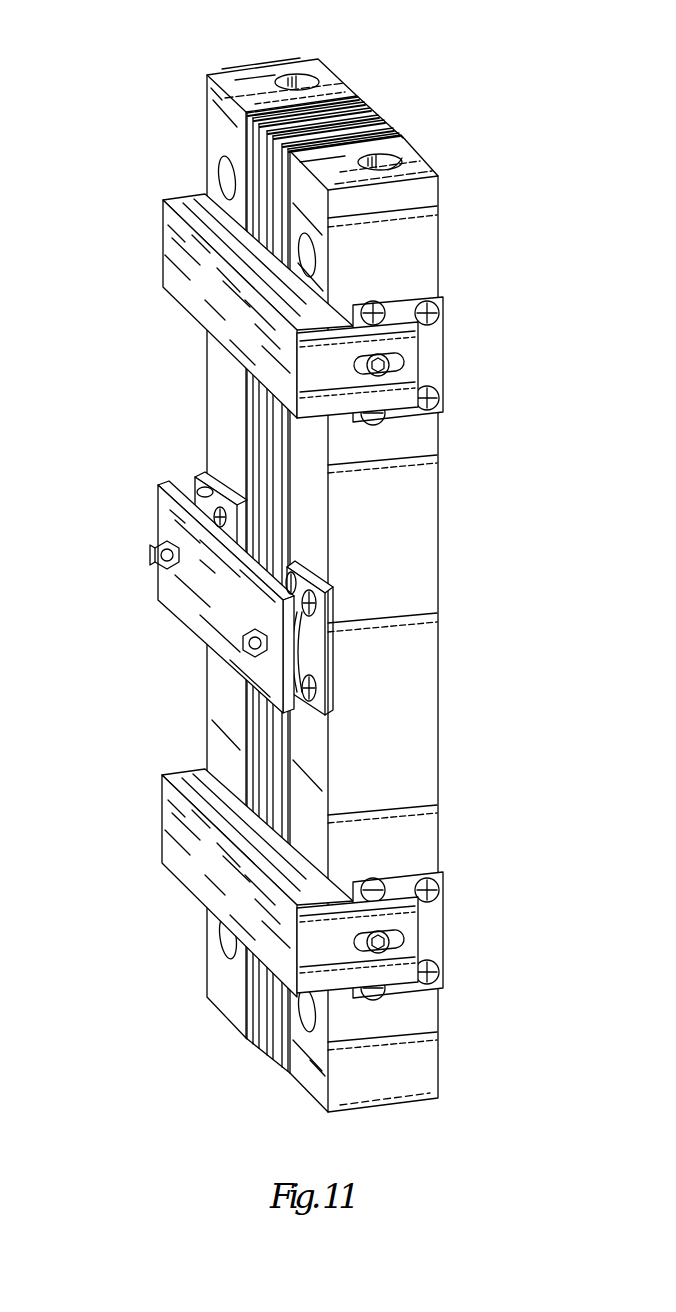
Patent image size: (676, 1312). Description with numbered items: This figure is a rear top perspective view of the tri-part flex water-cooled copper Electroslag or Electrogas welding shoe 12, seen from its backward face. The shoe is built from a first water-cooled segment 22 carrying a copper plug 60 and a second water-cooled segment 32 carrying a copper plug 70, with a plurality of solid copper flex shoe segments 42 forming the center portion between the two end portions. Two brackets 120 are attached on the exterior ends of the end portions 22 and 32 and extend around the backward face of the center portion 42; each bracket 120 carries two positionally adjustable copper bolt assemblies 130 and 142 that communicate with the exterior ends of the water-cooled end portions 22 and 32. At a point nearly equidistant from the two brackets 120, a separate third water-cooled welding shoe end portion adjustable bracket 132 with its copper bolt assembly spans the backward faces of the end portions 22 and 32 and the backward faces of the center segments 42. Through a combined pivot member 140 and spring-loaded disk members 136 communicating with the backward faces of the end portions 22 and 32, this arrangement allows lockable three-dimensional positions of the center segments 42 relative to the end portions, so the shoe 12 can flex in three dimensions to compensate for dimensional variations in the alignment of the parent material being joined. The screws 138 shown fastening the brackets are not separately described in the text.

The tri-part flex water-cooled copper Electroslag or Electrogas welding shoe 12 is at (286, 560).
The first water-cooled segment 22 is at (242, 73).
The second water-cooled segment 32 is at (393, 147).
The solid copper flex shoe segments 42 is at (365, 95).
The copper plug 60 is at (400, 140).
The copper plug 70 is at (297, 80).
The bracket 120 is at (187, 296).
The positionally adjustable copper bolt assembly 130 is at (400, 362).
The third water-cooled welding shoe end portion adjustable bracket 132 is at (190, 607).
The spring-loaded disk members 136 is at (295, 647).
The screw 138 is at (197, 490).
The pivot member 140 is at (190, 492).
The positionally adjustable copper bolt assembly 142 is at (440, 377).